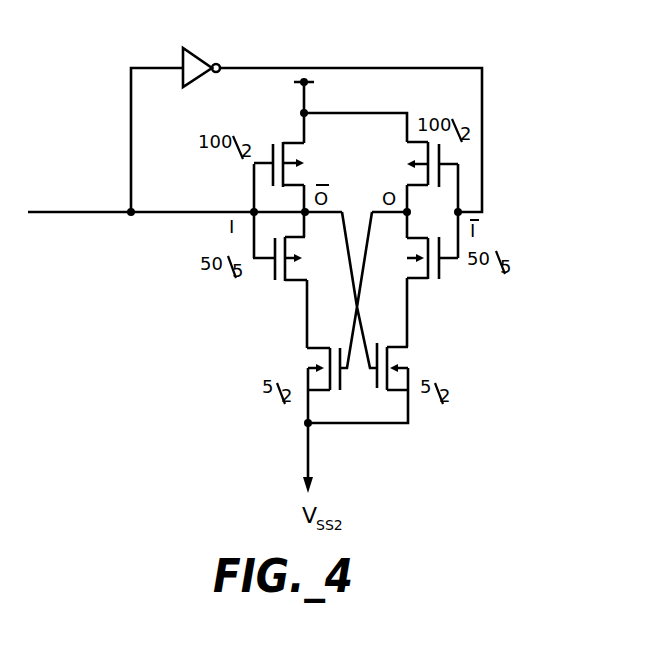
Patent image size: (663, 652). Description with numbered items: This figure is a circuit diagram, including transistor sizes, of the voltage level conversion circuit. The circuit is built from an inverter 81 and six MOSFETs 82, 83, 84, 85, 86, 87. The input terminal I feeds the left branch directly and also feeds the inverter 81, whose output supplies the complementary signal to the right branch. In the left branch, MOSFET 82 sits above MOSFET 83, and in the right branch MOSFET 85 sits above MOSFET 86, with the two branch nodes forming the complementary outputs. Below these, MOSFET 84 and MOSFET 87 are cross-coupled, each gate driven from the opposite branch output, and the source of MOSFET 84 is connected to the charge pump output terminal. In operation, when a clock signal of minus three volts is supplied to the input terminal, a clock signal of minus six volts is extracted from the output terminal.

The inverter 81 is at (194, 51).
The MOSFET 82 is at (286, 155).
The MOSFET 83 is at (292, 284).
The MOSFET 84 is at (316, 350).
The MOSFET 85 is at (425, 174).
The MOSFET 86 is at (415, 284).
The MOSFET 87 is at (395, 350).